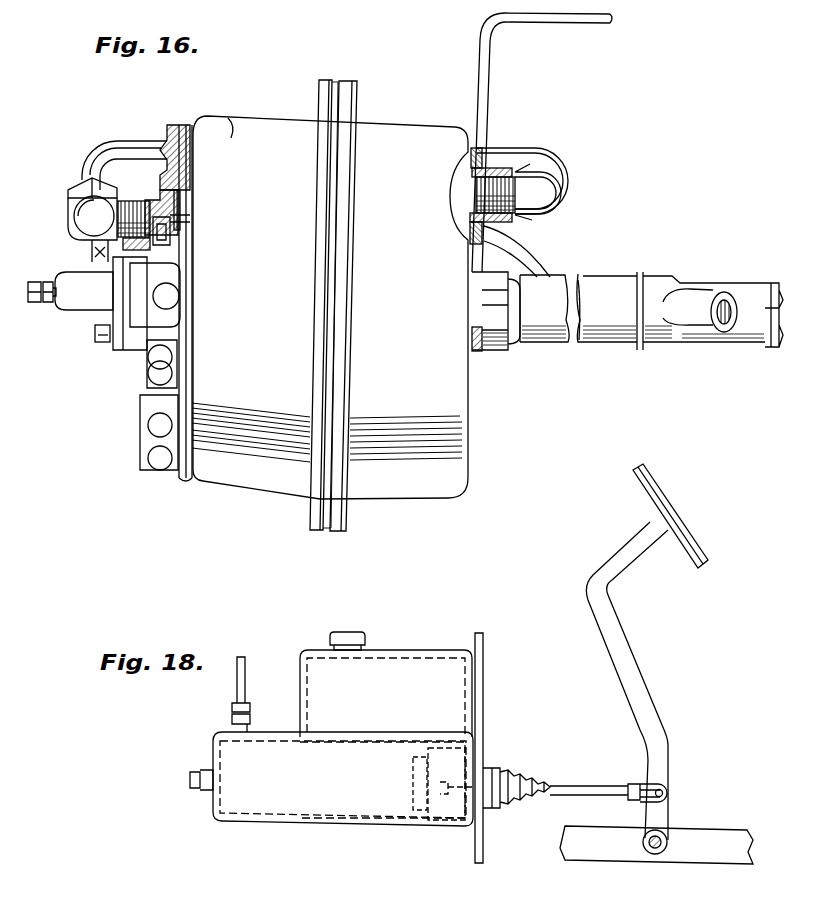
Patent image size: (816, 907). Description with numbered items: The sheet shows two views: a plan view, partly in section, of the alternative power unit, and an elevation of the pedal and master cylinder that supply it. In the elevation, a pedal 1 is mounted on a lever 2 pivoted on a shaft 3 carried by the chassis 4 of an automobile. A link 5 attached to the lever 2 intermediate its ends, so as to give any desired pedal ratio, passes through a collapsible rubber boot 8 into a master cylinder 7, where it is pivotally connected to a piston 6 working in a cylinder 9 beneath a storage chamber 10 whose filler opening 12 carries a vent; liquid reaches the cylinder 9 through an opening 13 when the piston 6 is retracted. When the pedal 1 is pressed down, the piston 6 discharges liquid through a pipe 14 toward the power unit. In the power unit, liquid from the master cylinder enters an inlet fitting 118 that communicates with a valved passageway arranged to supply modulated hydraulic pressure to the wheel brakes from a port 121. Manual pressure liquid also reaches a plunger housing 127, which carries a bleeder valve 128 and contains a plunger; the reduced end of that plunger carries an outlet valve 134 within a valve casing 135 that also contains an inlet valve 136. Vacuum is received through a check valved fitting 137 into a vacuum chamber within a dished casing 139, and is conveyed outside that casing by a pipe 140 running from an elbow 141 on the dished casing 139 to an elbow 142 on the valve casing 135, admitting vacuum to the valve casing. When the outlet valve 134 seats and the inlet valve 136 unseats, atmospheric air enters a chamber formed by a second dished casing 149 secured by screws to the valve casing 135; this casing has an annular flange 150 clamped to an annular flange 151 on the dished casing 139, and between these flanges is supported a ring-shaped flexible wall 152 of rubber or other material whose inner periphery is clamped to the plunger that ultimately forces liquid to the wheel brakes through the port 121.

In FIG. 16, the inlet fitting 118 is at (774, 286).
In FIG. 16, the port 121 is at (724, 332).
In FIG. 16, the plunger housing 127 is at (73, 306).
In FIG. 16, the bleeder valve 128 is at (45, 305).
In FIG. 16, the outlet valve 134 is at (171, 240).
In FIG. 16, the valve casing 135 is at (147, 196).
In FIG. 16, the inlet valve 136 is at (190, 222).
In FIG. 16, the check valved fitting 137 is at (495, 348).
In FIG. 16, the dished casing 139 is at (412, 136).
In FIG. 16, the pipe 140 is at (517, 162).
In FIG. 16, the elbow 141 is at (530, 218).
In FIG. 16, the elbow 142 is at (80, 223).
In FIG. 16, the dished casing 149 is at (229, 122).
In FIG. 16, the annular flange 150 is at (330, 83).
In FIG. 16, the annular flange 151 is at (351, 84).
In FIG. 16, the flexible wall 152 is at (336, 101).
In FIG. 18, the pedal 1 is at (688, 533).
In FIG. 18, the lever 2 is at (622, 648).
In FIG. 18, the shaft 3 is at (668, 844).
In FIG. 18, the chassis 4 is at (605, 848).
In FIG. 18, the link 5 is at (592, 790).
In FIG. 18, the piston 6 is at (420, 752).
In FIG. 18, the master cylinder 7 is at (238, 822).
In FIG. 18, the collapsible rubber boot 8 is at (516, 768).
In FIG. 18, the cylinder 9 is at (356, 806).
In FIG. 18, the storage chamber 10 is at (378, 668).
In FIG. 18, the filler opening 12 is at (343, 641).
In FIG. 18, the opening 13 is at (412, 758).
In FIG. 18, the pipe 14 is at (247, 692).